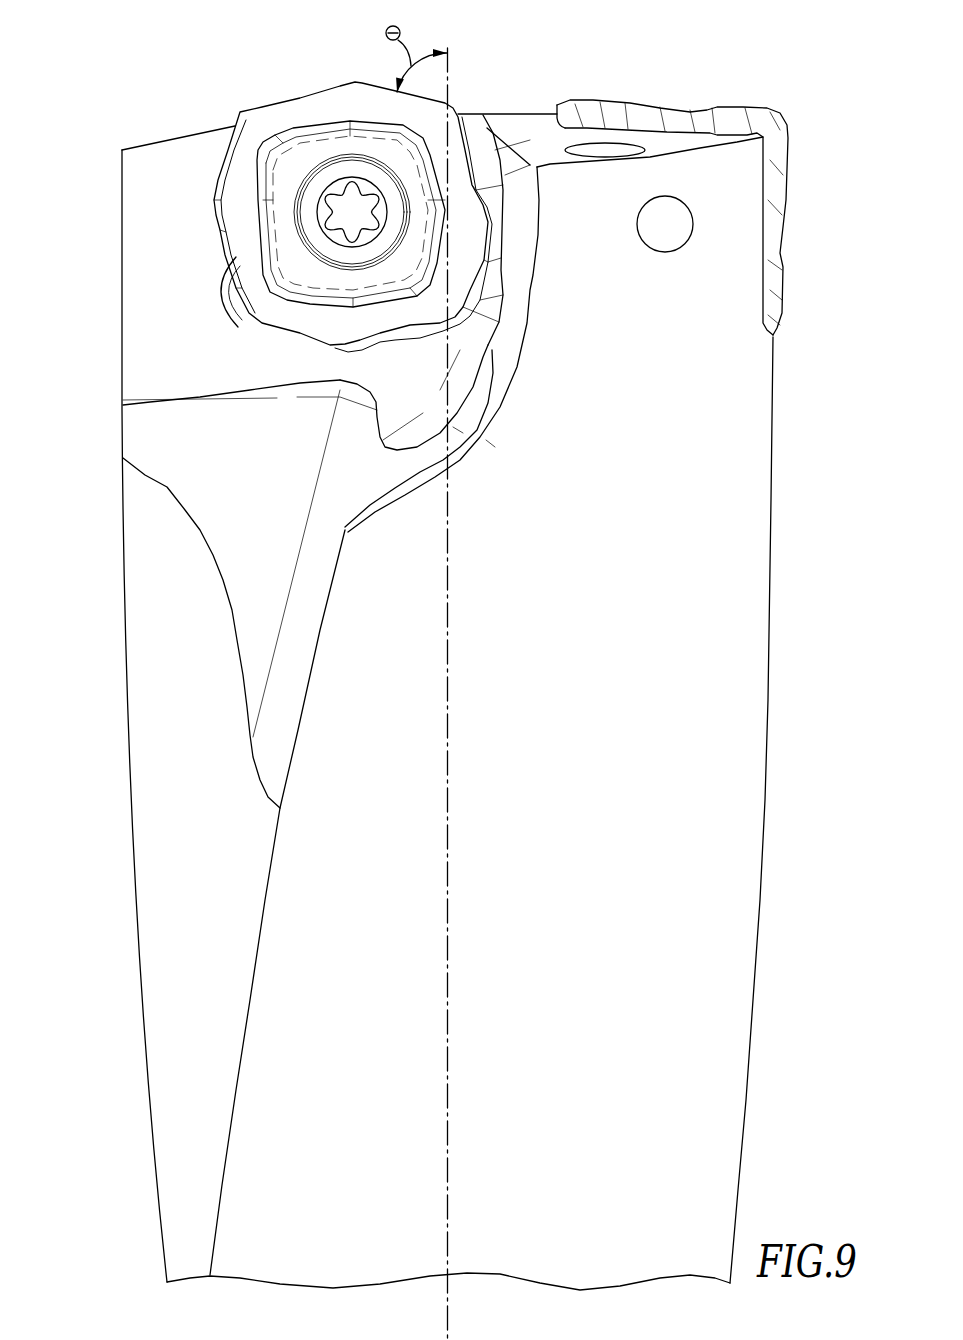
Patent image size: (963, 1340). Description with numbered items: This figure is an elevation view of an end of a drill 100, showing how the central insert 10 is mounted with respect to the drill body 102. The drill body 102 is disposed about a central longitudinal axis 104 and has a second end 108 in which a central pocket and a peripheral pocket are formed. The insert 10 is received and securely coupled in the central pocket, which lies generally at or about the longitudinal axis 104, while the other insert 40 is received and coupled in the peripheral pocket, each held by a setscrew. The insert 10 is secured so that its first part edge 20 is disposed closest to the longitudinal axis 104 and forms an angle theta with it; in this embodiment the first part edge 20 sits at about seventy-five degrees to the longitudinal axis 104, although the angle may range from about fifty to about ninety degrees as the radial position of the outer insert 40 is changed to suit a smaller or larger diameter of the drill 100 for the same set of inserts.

The drill 100 is at (124, 86).
The drill body 102 is at (753, 432).
The longitudinal axis 104 is at (455, 65).
The second end 108 is at (511, 102).
The insert 40 is at (748, 105).
The first part edge 20 is at (372, 85).
The insert 10 is at (317, 283).